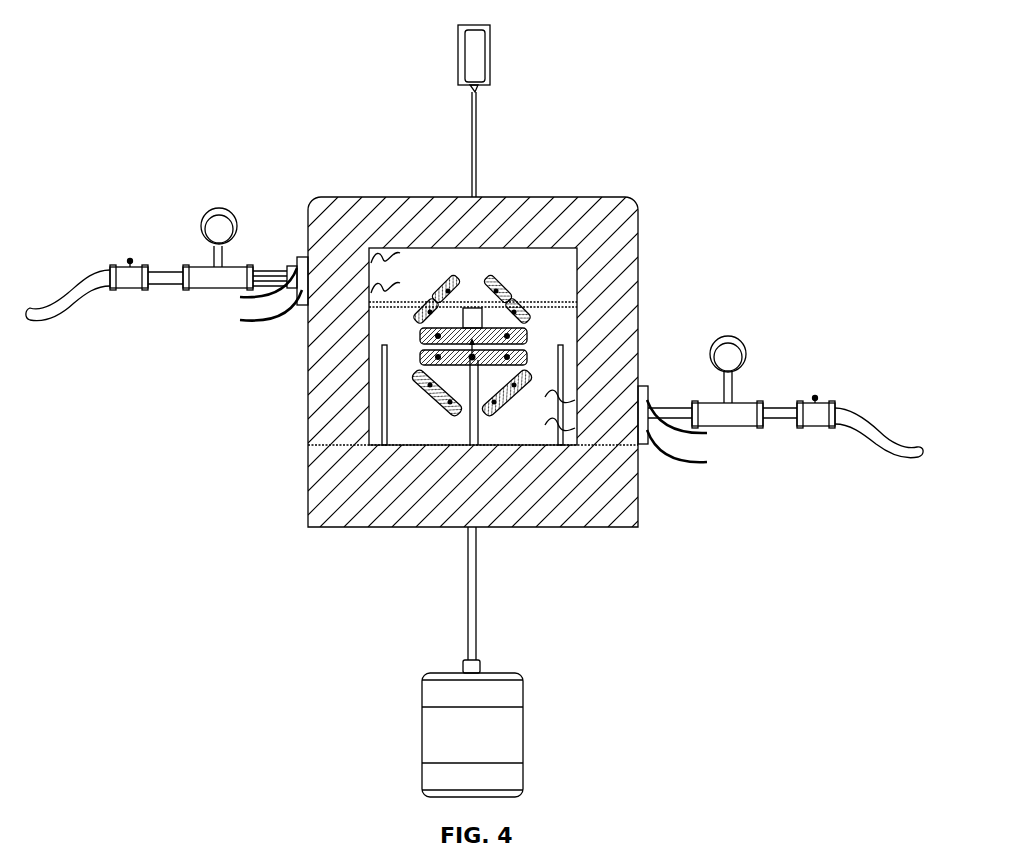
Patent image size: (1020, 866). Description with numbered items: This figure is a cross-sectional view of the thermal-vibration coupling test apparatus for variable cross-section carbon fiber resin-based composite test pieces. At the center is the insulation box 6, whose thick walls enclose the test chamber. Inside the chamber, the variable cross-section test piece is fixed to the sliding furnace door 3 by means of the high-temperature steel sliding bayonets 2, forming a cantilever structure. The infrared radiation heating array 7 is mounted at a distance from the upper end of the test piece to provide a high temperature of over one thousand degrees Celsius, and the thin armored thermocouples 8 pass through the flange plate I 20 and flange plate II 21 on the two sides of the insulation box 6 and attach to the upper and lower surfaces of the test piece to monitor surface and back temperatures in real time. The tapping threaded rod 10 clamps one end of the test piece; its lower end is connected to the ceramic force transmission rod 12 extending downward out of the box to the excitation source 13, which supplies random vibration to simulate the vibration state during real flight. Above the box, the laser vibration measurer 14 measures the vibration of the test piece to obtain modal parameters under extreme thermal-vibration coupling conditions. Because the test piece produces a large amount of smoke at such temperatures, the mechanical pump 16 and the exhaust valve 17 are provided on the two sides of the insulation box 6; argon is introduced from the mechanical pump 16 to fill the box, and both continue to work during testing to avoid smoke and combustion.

The high-temperature steel sliding bayonets 2 is at (443, 403).
The sliding furnace door 3 is at (368, 446).
The insulation box 6 is at (640, 273).
The infrared radiation heating array 7 is at (545, 300).
The thin armored thermocouples 8 is at (265, 318).
The tapping threaded rod 10 is at (483, 367).
The ceramic force transmission rod 12 is at (472, 630).
The excitation source 13 is at (523, 742).
The laser vibration measurer 14 is at (477, 60).
The mechanical pump 16 is at (735, 400).
The exhaust valve 17 is at (205, 277).
The flange plate I 20 is at (643, 387).
The flange plate II 21 is at (305, 258).